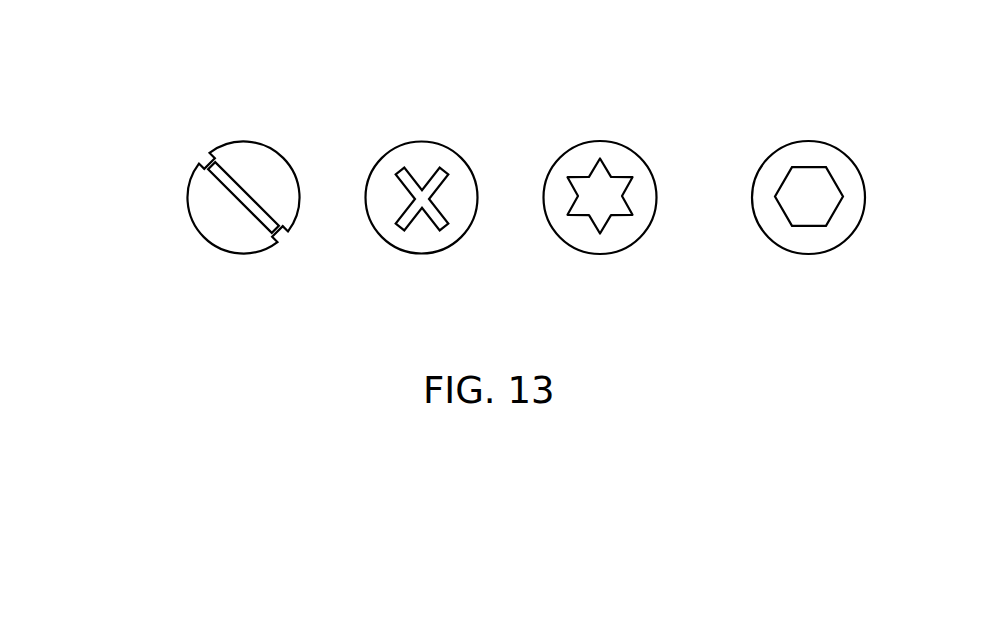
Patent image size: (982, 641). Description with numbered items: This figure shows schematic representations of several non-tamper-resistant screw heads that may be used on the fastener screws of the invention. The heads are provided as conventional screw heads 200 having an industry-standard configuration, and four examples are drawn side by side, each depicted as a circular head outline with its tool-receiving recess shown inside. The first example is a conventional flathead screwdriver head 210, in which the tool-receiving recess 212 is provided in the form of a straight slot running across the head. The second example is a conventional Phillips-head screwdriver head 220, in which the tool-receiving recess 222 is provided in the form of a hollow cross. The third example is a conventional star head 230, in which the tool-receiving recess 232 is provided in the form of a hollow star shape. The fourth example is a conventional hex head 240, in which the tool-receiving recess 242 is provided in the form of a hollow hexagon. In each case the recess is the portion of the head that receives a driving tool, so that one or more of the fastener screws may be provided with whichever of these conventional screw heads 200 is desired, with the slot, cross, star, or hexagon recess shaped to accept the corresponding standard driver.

The conventional screw heads 200 is at (138, 31).
The flathead screwdriver head 210 is at (217, 94).
The tool-receiving recess 212 is at (193, 146).
The Phillips-head screwdriver head 220 is at (402, 96).
The tool-receiving recess 222 is at (413, 170).
The star head 230 is at (572, 95).
The tool-receiving recess 232 is at (612, 170).
The hex head 240 is at (786, 95).
The tool-receiving recess 242 is at (818, 173).